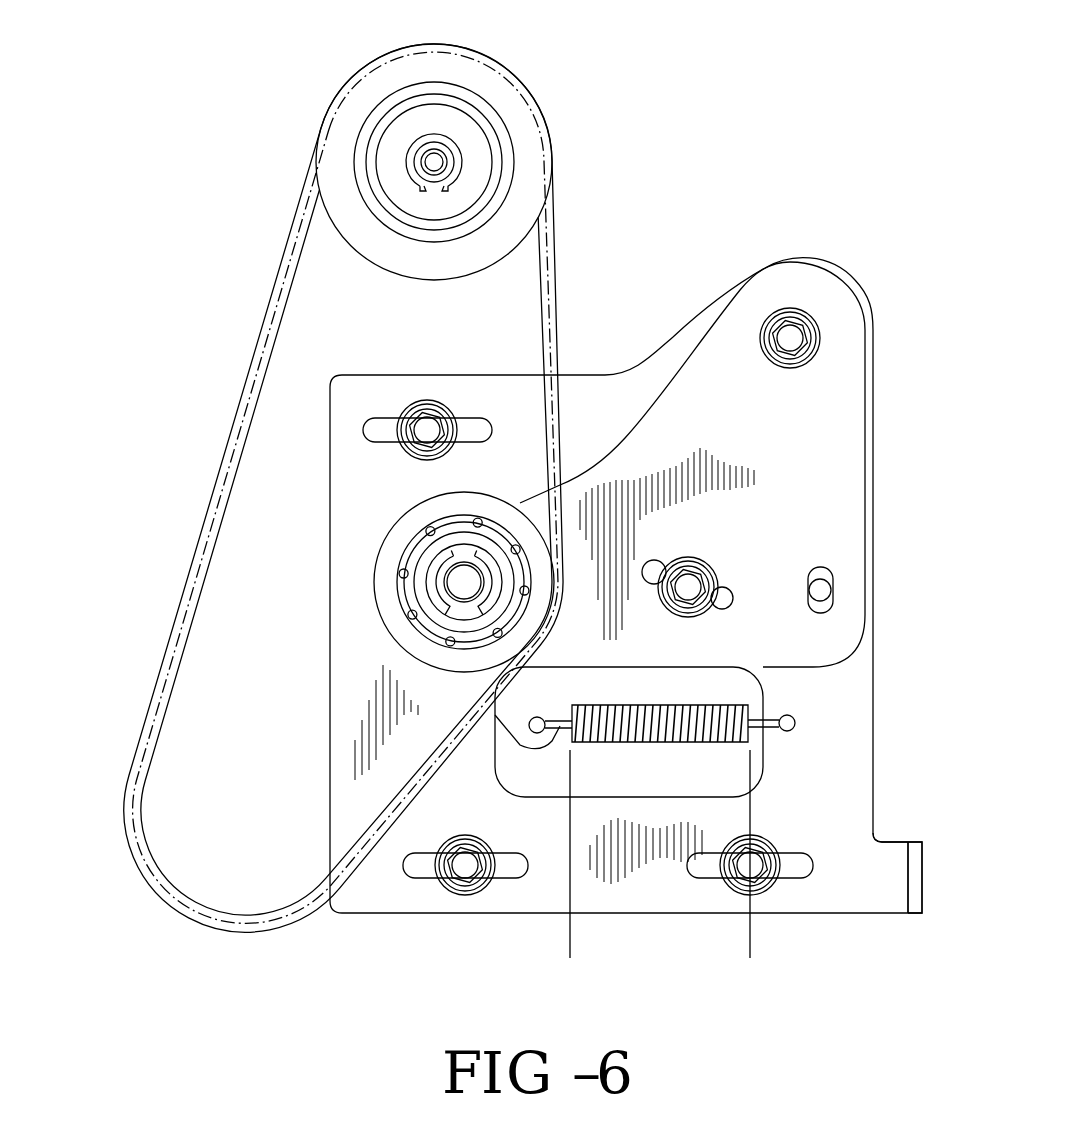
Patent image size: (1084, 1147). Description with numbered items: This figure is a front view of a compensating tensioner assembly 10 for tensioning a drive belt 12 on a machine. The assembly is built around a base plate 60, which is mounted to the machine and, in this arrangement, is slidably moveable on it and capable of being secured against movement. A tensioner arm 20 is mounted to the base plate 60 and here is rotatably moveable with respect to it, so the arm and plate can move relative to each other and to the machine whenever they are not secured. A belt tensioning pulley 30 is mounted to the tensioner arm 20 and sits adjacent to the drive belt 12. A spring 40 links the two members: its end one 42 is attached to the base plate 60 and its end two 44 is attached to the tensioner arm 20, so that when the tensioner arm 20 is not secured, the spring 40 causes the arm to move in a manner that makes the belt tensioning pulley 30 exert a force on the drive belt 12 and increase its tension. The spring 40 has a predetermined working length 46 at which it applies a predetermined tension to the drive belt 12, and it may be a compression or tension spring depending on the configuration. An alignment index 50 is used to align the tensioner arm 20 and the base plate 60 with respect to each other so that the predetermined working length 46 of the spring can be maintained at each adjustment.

The compensating tensioner assembly 10 is at (642, 280).
The drive belt 12 is at (255, 360).
The tensioner arm 20 is at (815, 435).
The belt tensioning pulley 30 is at (400, 629).
The spring 40 is at (690, 727).
The end one 42 is at (748, 745).
The end two 44 is at (578, 742).
The predetermined working length 46 is at (748, 944).
The alignment index 50 is at (838, 556).
The base plate 60 is at (832, 812).